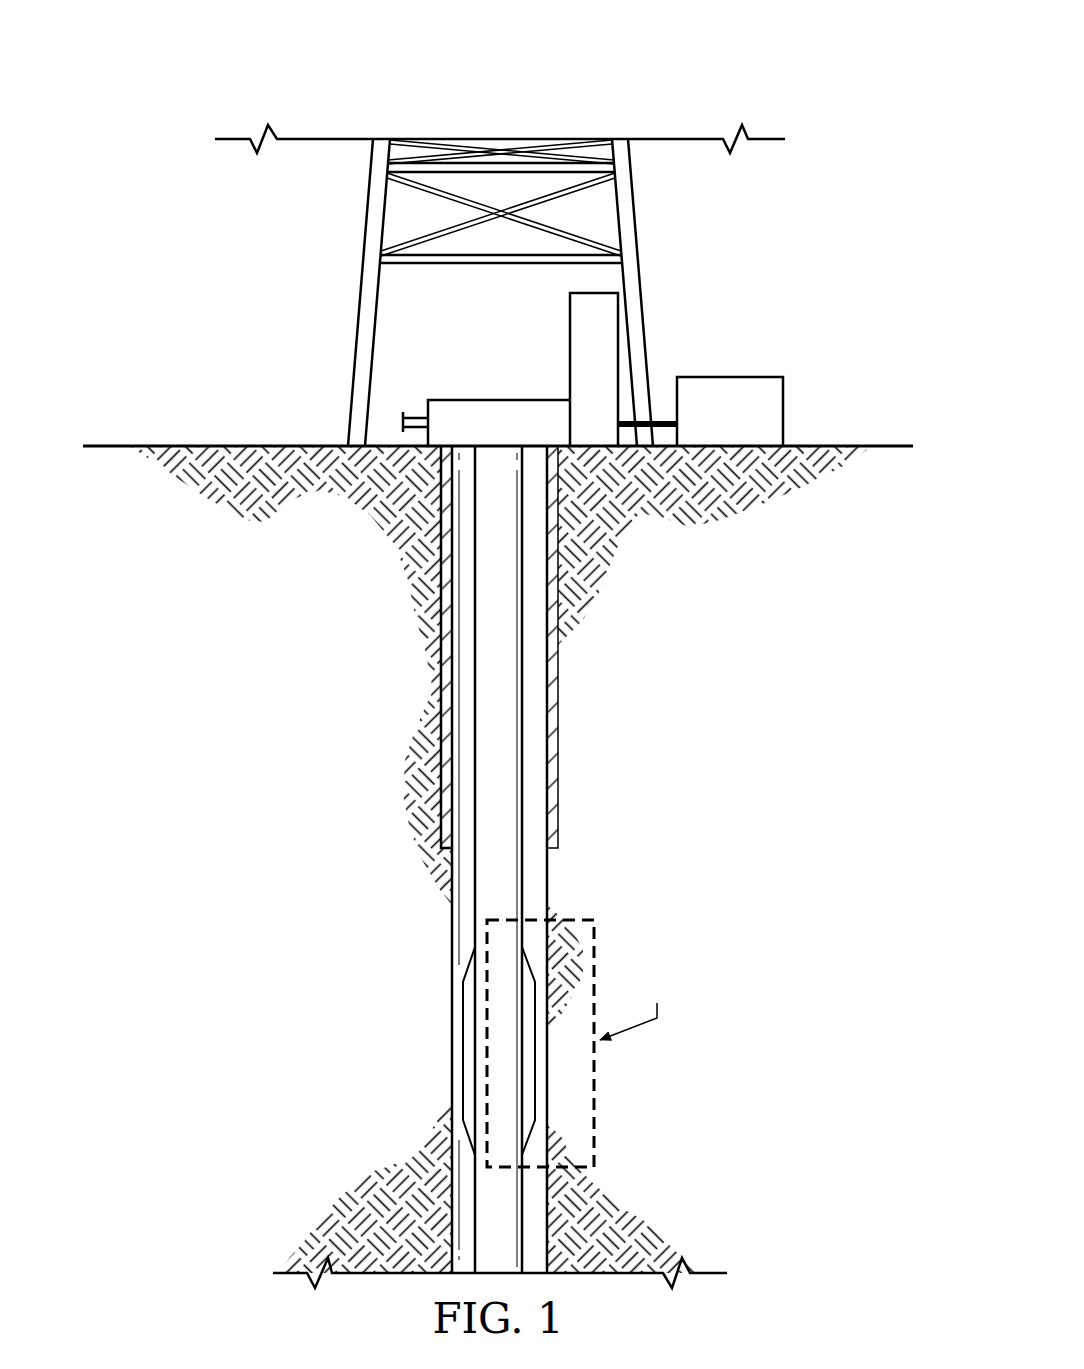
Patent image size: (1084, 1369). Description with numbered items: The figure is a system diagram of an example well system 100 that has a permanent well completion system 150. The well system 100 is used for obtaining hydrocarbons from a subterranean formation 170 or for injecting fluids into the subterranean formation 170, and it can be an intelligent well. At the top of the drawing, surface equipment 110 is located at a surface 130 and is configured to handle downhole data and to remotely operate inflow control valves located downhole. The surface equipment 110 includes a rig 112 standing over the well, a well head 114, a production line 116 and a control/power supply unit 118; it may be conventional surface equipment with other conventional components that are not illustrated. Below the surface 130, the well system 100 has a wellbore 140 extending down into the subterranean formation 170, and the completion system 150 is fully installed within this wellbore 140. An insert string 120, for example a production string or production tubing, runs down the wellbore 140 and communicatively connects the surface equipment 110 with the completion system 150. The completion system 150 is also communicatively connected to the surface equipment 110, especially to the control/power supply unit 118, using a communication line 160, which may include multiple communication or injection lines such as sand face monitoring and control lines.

The well system 100 is at (498, 644).
The surface equipment 110 is at (511, 292).
The rig 112 is at (359, 292).
The well head 114 is at (502, 408).
The production line 116 is at (418, 413).
The control/power supply unit 118 is at (732, 387).
The insert string 120 is at (530, 677).
The surface 130 is at (865, 444).
The wellbore 140 is at (538, 865).
The permanent well completion system 150 is at (470, 1045).
The communication line 160 is at (468, 902).
The subterranean formation 170 is at (770, 641).